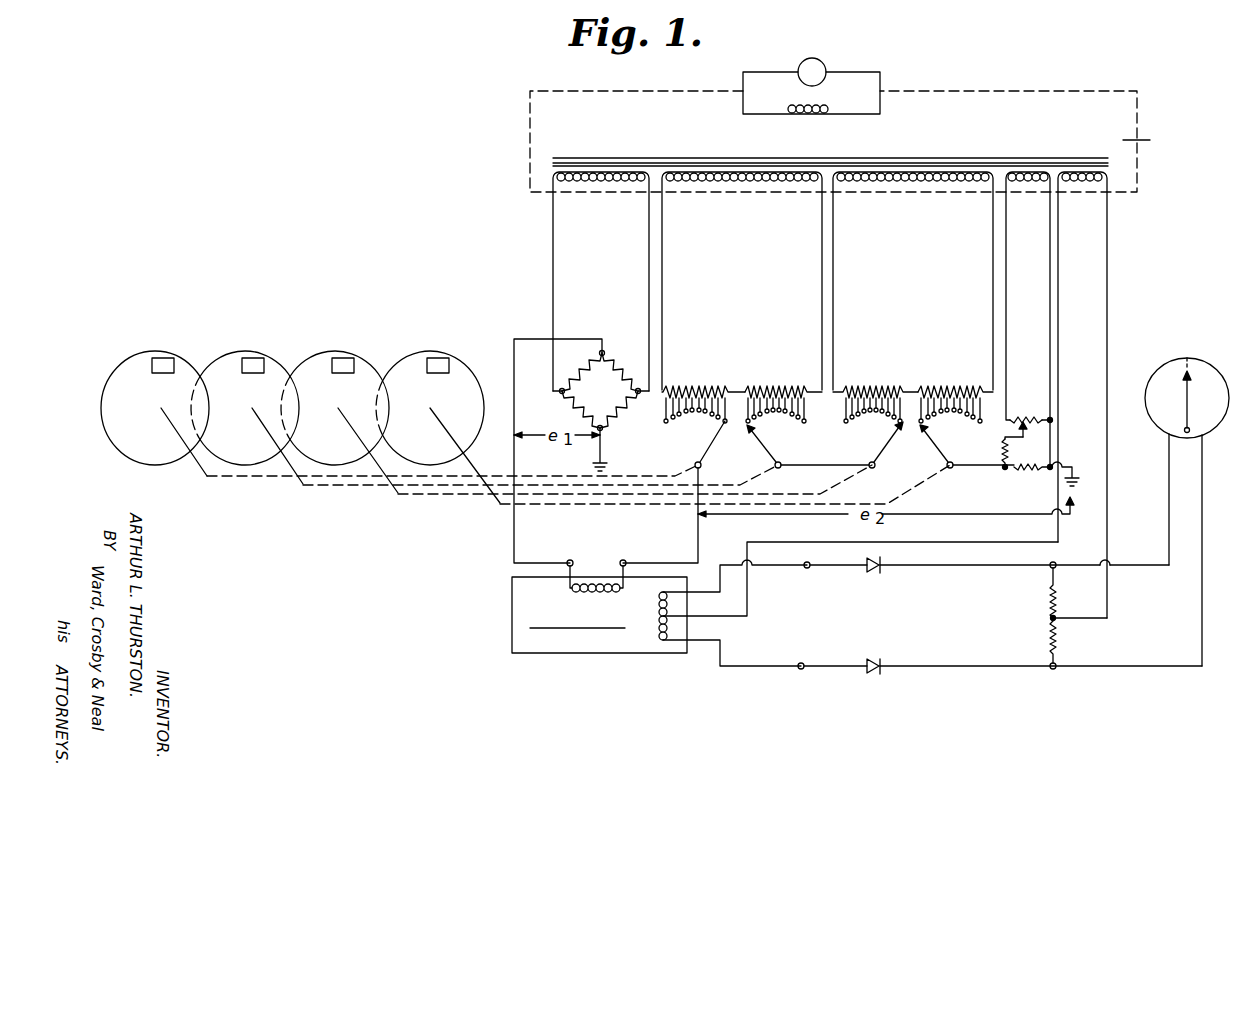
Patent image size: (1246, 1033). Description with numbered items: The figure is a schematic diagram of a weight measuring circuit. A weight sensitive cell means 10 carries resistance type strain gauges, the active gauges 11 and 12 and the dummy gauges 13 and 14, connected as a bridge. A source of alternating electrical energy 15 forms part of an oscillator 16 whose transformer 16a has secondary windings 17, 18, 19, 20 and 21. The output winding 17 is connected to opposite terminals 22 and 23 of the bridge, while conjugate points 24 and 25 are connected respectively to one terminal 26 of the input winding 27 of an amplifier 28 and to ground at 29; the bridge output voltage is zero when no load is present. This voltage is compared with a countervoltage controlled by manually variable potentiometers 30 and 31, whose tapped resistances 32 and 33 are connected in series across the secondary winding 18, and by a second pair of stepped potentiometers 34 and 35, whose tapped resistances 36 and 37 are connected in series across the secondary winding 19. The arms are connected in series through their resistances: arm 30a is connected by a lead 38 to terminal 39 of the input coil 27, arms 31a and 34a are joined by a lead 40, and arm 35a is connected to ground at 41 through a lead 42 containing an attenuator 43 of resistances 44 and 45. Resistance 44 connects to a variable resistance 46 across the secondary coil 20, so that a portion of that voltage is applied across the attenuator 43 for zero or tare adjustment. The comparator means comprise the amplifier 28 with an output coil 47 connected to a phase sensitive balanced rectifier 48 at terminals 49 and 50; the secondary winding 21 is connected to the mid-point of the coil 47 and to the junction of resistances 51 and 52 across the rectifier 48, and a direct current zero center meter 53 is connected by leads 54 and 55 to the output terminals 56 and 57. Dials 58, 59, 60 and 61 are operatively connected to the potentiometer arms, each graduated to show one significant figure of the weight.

The weight sensitive cell means 10 is at (585, 437).
The active strain gauge resistance 11 is at (581, 373).
The active strain gauge resistance 12 is at (630, 412).
The dummy strain gauge resistance 13 is at (626, 372).
The dummy strain gauge resistance 14 is at (574, 413).
The source of alternating electrical energy 15 is at (825, 67).
The oscillator 16 is at (526, 125).
The transformer 16a is at (1155, 140).
The output winding 17 is at (611, 182).
The secondary winding 18 is at (753, 182).
The secondary winding 19 is at (923, 182).
The secondary coil 20 is at (1037, 182).
The secondary winding 21 is at (1087, 182).
The bridge terminal 22 is at (566, 390).
The bridge terminal 23 is at (634, 391).
The conjugate point 24 is at (603, 350).
The conjugate point 25 is at (603, 430).
The input winding terminal 26 is at (570, 560).
The input winding 27 is at (598, 584).
The amplifier 28 is at (512, 604).
The ground 29 is at (605, 467).
The manually variable potentiometer 30 is at (718, 446).
The potentiometer arm 30a is at (712, 450).
The manually variable potentiometer 31 is at (783, 448).
The potentiometer arm 31a is at (782, 452).
The tapped resistance 32 is at (700, 386).
The tapped resistance 33 is at (777, 386).
The stepped potentiometer 34 is at (869, 446).
The potentiometer arm 34a is at (873, 452).
The stepped potentiometer 35 is at (935, 448).
The potentiometer arm 35a is at (940, 452).
The tapped resistance 36 is at (880, 386).
The tapped resistance 37 is at (960, 386).
The lead 38 is at (697, 528).
The input coil terminal 39 is at (623, 560).
The lead 40 is at (832, 468).
The ground 41 is at (1076, 476).
The lead 42 is at (964, 468).
The attenuator 43 is at (1025, 443).
The resistance 44 is at (1002, 452).
The resistance 45 is at (1028, 470).
The variable resistance 46 is at (1029, 416).
The output coil 47 is at (661, 634).
The phase sensitive balanced rectifier 48 is at (997, 617).
The rectifier terminal 49 is at (807, 568).
The rectifier terminal 50 is at (801, 663).
The resistance 51 is at (1050, 599).
The resistance 52 is at (1050, 632).
The zero center meter 53 is at (1160, 370).
The lead 54 is at (1169, 522).
The lead 55 is at (1202, 604).
The output terminal 56 is at (1057, 563).
The output terminal 57 is at (1050, 671).
The dial 58 is at (183, 353).
The dial 59 is at (283, 353).
The dial 60 is at (373, 353).
The dial 61 is at (465, 353).